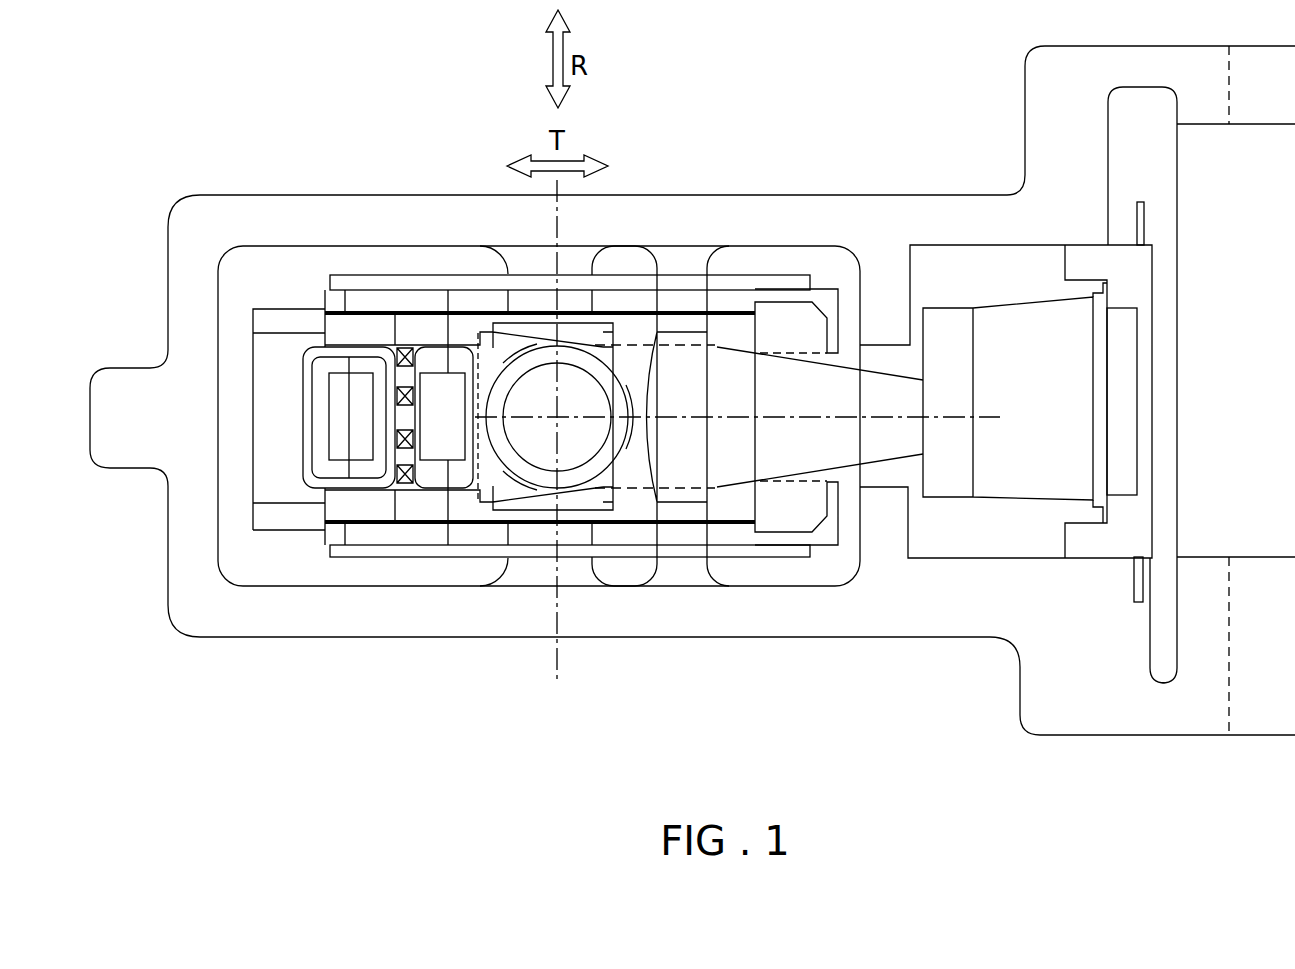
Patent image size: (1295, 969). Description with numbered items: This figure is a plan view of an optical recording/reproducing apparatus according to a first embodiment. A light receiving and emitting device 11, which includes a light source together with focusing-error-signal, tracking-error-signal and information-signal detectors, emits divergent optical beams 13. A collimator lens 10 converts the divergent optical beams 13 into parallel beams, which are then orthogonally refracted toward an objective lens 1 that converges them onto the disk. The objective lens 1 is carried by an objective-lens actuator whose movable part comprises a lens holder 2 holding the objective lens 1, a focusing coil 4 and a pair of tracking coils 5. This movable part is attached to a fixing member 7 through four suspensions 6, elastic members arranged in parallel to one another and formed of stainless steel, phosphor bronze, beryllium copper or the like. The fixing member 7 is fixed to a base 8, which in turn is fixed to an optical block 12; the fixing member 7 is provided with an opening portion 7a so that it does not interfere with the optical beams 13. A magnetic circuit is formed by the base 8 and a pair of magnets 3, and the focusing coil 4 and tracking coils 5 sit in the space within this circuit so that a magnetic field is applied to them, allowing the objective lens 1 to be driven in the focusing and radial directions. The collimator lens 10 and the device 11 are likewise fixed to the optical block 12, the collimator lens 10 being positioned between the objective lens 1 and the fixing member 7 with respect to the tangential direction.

The objective lens 1 is at (578, 437).
The lens holder 2 is at (275, 322).
The magnets 3 is at (363, 450).
The focusing coil 4 is at (305, 455).
The tracking coils 5 is at (413, 460).
The suspensions 6 is at (678, 312).
The fixing member 7 is at (777, 318).
The opening portion 7a is at (798, 387).
The base 8 is at (400, 548).
The collimator lens 10 is at (680, 477).
The light receiving and emitting device 11 is at (1003, 470).
The optical block 12 is at (1163, 722).
The optical beams 13 is at (875, 460).